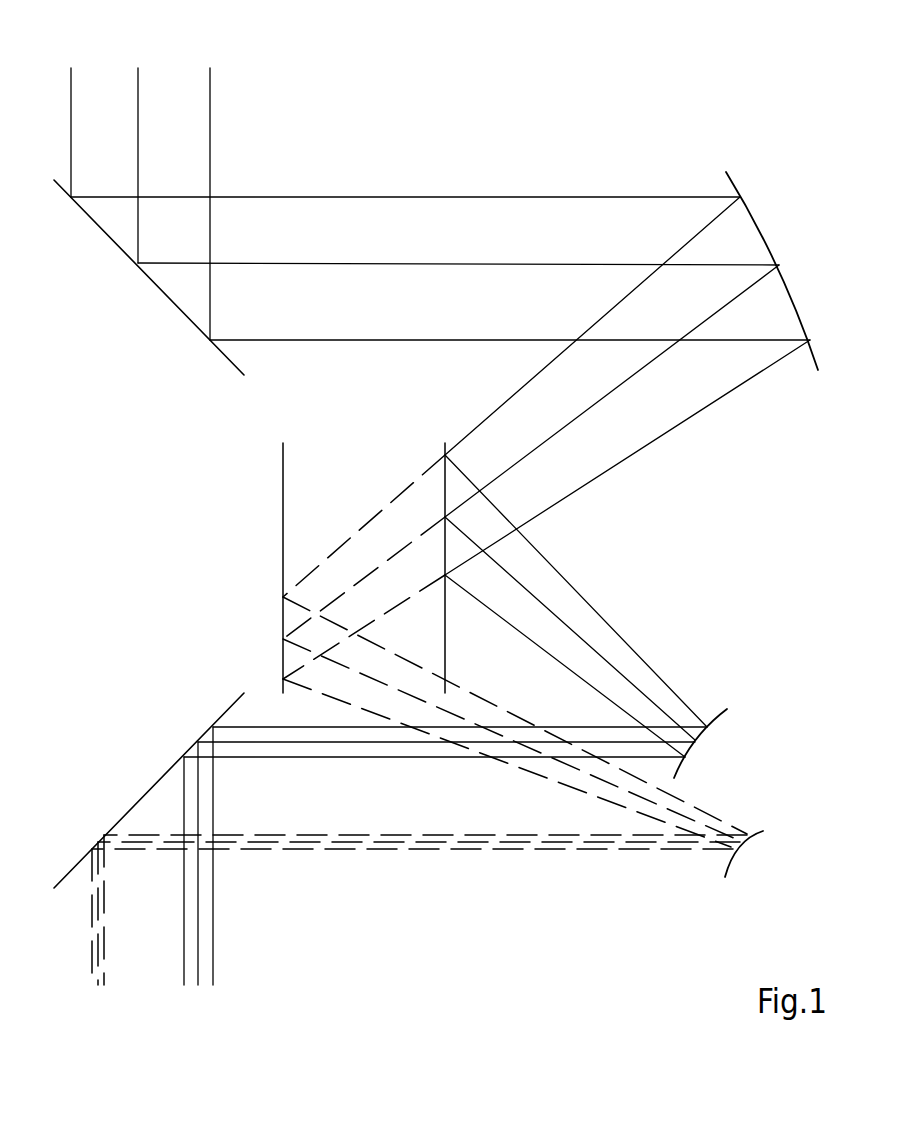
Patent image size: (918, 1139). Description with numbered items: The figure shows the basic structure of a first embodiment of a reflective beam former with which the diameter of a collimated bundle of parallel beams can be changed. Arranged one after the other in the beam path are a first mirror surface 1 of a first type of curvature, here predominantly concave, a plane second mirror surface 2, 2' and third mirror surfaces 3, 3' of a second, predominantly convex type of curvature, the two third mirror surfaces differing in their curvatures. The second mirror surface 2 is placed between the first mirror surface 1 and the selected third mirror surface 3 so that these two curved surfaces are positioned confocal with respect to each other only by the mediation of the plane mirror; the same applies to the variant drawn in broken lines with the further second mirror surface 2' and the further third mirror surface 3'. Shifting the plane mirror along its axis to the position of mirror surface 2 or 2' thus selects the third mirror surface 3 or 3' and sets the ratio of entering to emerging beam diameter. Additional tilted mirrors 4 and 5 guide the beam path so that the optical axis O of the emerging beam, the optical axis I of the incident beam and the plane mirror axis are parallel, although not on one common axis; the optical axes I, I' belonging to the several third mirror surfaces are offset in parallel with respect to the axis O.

The optical axis of the emerging light beam O is at (139, 78).
The first mirror surface 1 is at (735, 182).
The second mirror surface 2 is at (419, 552).
The further second mirror surface 2' is at (256, 552).
The third mirror surface 3 is at (728, 712).
The further third mirror surface 3' is at (770, 824).
The tilted mirror 4 is at (108, 240).
The tilted mirror 5 is at (142, 795).
The optical axis of the incident light beam I is at (198, 885).
The further optical axis I' is at (106, 939).